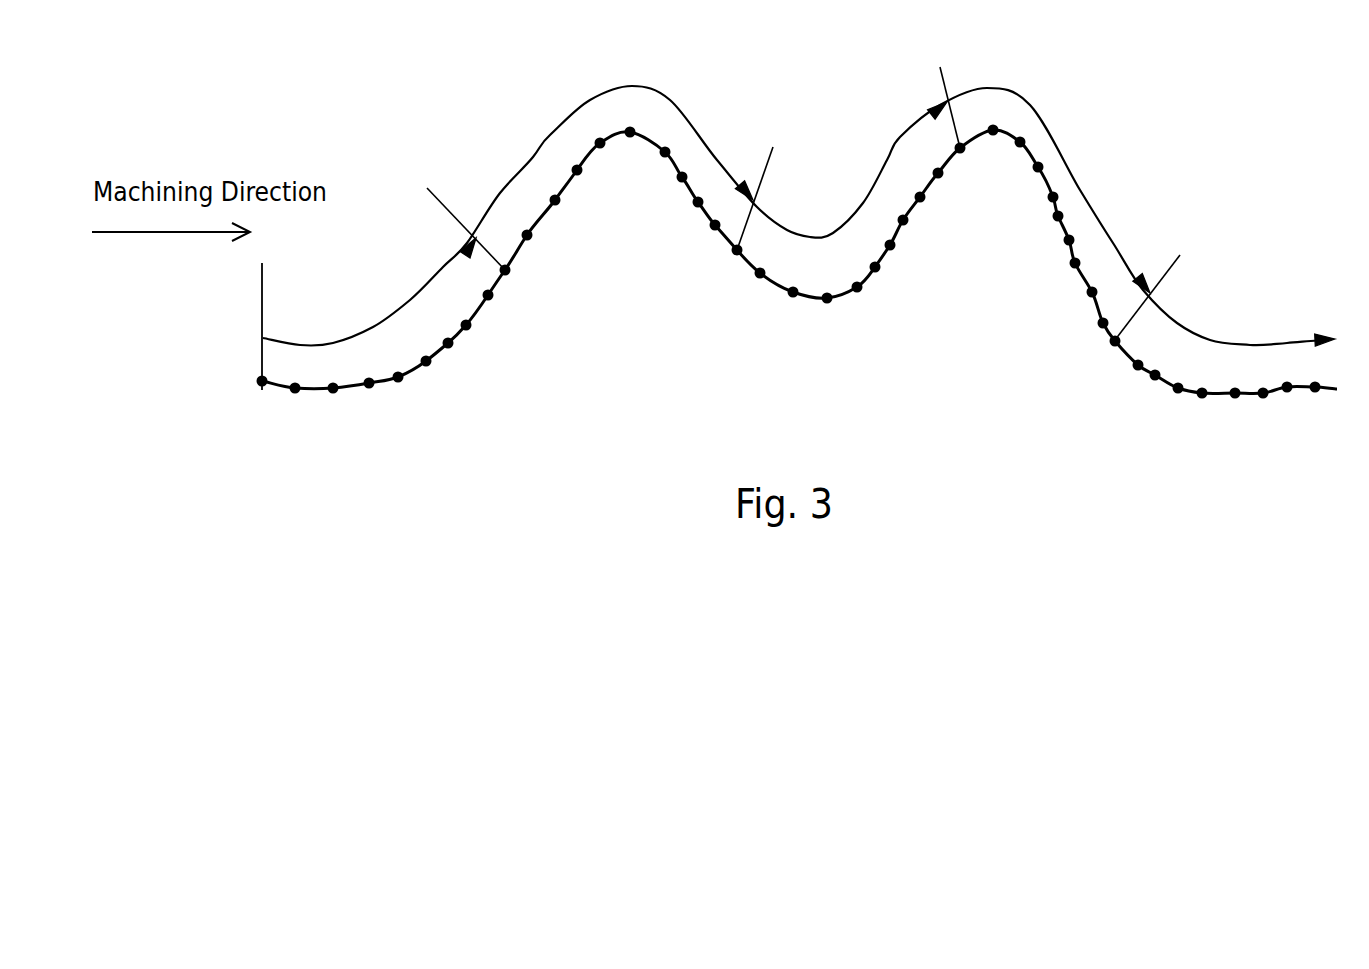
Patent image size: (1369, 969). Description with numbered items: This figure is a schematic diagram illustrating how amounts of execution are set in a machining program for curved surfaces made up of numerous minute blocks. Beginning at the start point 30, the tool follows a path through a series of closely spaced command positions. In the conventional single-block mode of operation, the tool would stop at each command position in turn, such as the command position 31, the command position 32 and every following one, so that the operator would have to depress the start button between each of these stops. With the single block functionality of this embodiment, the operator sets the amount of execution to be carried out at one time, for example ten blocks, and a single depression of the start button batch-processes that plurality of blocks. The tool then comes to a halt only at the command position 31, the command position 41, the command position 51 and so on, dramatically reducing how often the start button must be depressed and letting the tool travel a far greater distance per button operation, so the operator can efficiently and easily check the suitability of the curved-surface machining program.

The machining start point / start line 30 is at (258, 380).
The command position 31 is at (262, 386).
The command position 32 is at (296, 393).
The command position 41 is at (507, 274).
The command position 51 is at (736, 254).